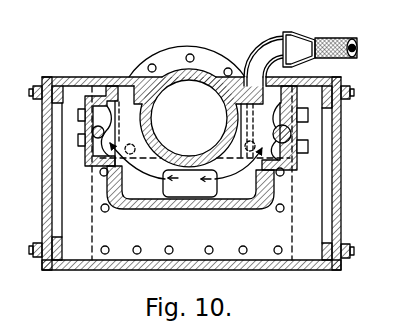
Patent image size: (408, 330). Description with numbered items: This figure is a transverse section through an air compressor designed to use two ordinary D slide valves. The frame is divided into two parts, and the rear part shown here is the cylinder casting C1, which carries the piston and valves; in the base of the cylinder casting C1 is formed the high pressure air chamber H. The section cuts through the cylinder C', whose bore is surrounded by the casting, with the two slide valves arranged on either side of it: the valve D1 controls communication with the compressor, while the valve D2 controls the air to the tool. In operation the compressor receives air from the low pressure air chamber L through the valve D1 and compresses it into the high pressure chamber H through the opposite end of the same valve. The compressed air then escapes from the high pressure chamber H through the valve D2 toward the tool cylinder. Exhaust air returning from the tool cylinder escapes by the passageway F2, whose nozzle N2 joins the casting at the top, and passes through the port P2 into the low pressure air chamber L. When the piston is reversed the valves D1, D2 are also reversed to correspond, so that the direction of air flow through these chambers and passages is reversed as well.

The high pressure air chamber H is at (191, 173).
The cylinder casting C1 is at (272, 267).
The cylinder body C' is at (189, 98).
The port P2 is at (224, 77).
The nozzle N2 is at (265, 54).
The passageway F2 is at (328, 36).
The slide valve D1 is at (85, 143).
The slide valve D2 is at (308, 146).
The low pressure air chamber L is at (186, 170).